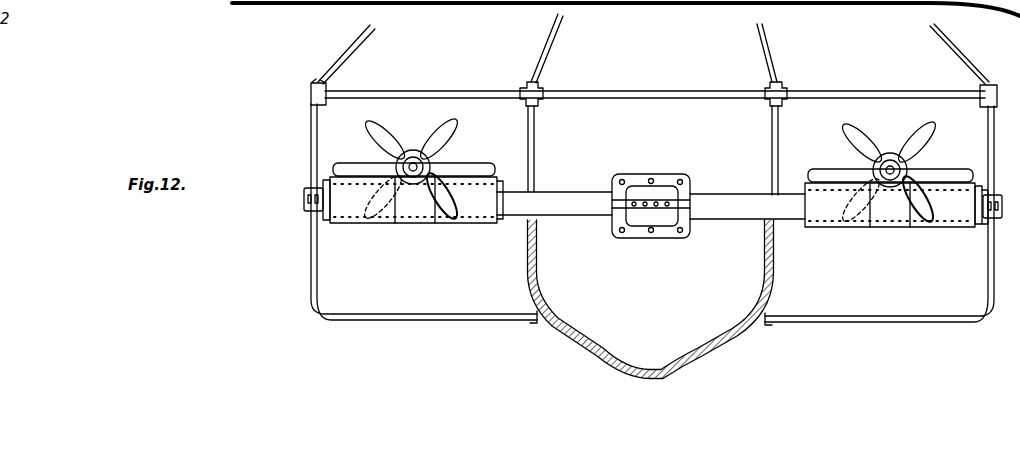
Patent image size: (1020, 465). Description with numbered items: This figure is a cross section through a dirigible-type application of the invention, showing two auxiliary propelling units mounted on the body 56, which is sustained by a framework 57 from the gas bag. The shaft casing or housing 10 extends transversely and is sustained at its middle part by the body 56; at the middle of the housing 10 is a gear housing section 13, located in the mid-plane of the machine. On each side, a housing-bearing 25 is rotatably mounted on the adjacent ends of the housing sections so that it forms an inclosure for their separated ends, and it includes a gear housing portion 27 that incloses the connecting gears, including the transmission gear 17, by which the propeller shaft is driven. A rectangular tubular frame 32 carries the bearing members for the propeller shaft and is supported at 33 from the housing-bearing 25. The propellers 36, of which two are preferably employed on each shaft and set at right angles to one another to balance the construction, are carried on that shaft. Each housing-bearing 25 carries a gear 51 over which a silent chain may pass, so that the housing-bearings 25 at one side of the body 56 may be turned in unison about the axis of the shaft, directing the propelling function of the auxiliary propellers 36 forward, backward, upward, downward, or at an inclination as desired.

The shaft casing 10 is at (651, 205).
The gear housing section 13 is at (656, 188).
The transmission gear 17 is at (342, 319).
The housing-bearing 25 is at (652, 202).
The gear housing portion 27 is at (418, 158).
The rectangular tubular frame 32 is at (470, 171).
The frame support 33 is at (494, 180).
The propellers 36 is at (393, 142).
The gears 51 is at (325, 187).
The body 56 is at (651, 299).
The framework 57 is at (537, 68).